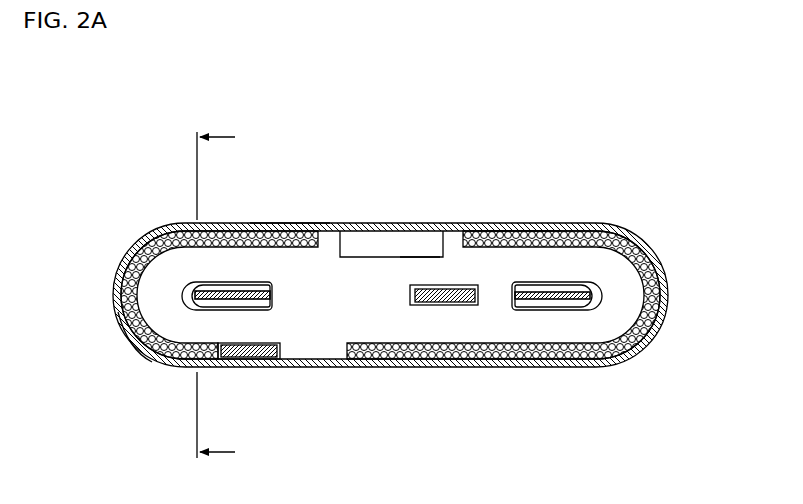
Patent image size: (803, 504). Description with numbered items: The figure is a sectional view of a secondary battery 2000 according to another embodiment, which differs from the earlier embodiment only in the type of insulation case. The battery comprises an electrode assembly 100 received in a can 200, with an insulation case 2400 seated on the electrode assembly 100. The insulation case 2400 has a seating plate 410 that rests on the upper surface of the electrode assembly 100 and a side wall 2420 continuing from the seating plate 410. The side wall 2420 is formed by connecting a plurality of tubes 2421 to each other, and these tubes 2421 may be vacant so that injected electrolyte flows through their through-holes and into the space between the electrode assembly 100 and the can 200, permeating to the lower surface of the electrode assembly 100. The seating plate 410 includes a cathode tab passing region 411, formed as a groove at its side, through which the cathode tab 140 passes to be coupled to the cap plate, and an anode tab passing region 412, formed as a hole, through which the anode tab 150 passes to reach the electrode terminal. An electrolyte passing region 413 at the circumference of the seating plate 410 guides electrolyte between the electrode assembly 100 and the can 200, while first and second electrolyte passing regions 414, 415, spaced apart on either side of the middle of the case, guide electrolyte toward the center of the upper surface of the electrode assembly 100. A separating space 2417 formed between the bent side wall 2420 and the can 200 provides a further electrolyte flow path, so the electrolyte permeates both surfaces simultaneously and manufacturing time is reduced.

The secondary battery 2000 is at (107, 126).
The electrode assembly 100 is at (598, 293).
The can 200 is at (613, 232).
The insulation case 2400 is at (650, 242).
The separating space 2417 is at (286, 227).
The side wall 2420 is at (512, 229).
The tubes 2421 is at (312, 231).
The seating plate 410 is at (398, 272).
The cathode tab passing region 411 is at (272, 358).
The anode tab passing region 412 is at (479, 306).
The electrolyte passing region 413 is at (427, 251).
The first electrolyte passing region 414 is at (228, 282).
The second electrolyte passing region 415 is at (556, 283).
The cathode tab 140 is at (243, 358).
The anode tab 150 is at (437, 305).